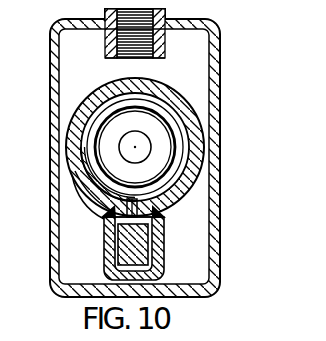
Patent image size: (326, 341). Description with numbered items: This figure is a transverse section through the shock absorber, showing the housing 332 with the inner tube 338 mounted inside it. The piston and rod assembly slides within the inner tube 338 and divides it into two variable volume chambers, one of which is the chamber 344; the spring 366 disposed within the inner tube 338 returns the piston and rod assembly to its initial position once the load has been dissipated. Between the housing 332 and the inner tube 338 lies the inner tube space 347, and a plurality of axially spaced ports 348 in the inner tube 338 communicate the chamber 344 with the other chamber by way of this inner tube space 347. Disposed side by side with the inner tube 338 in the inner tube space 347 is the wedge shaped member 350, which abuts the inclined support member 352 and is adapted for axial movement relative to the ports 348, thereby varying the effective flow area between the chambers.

The housing 332 is at (289, 52).
The inner tube space 347 is at (134, 156).
The inner tube 338 is at (156, 82).
The chamber 344 is at (158, 159).
The spring 366 is at (86, 164).
The ports 348 is at (138, 213).
The wedge shaped member 350 is at (145, 243).
The inclined support member 352 is at (212, 278).